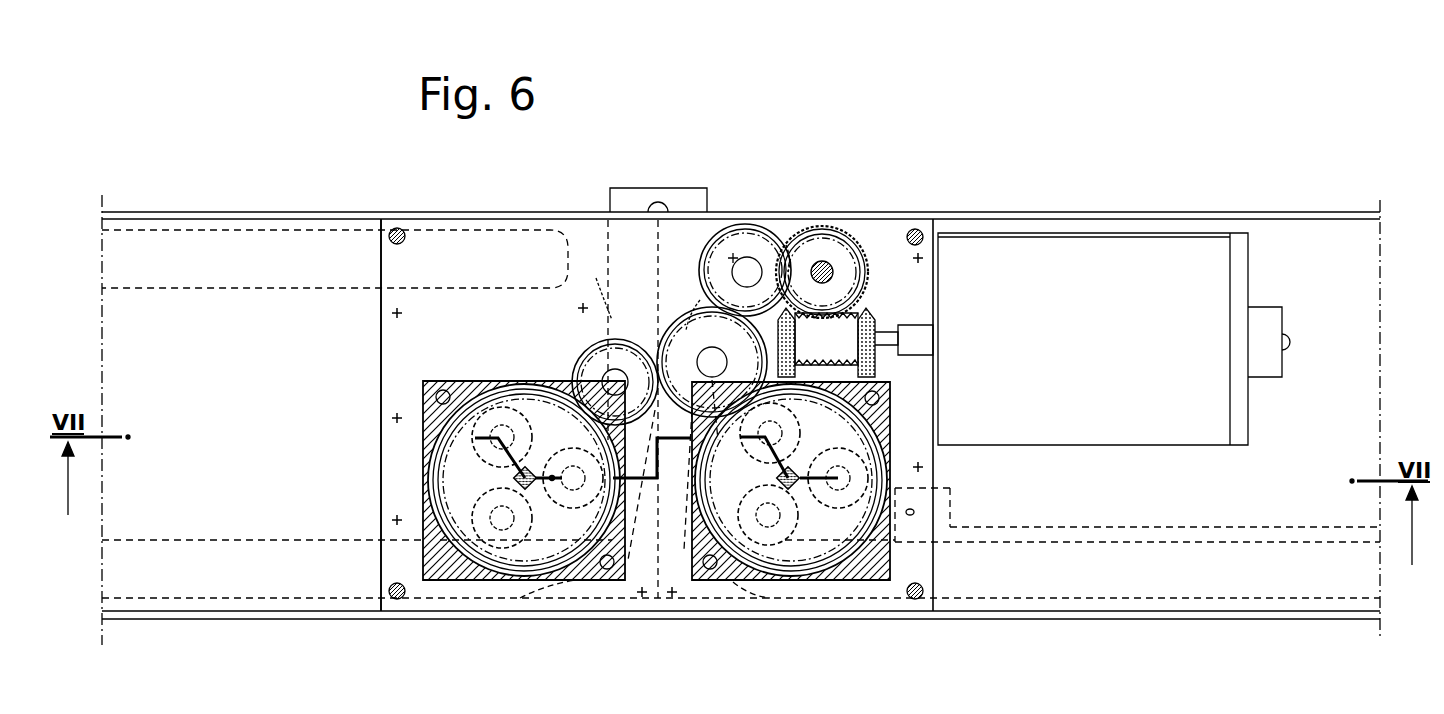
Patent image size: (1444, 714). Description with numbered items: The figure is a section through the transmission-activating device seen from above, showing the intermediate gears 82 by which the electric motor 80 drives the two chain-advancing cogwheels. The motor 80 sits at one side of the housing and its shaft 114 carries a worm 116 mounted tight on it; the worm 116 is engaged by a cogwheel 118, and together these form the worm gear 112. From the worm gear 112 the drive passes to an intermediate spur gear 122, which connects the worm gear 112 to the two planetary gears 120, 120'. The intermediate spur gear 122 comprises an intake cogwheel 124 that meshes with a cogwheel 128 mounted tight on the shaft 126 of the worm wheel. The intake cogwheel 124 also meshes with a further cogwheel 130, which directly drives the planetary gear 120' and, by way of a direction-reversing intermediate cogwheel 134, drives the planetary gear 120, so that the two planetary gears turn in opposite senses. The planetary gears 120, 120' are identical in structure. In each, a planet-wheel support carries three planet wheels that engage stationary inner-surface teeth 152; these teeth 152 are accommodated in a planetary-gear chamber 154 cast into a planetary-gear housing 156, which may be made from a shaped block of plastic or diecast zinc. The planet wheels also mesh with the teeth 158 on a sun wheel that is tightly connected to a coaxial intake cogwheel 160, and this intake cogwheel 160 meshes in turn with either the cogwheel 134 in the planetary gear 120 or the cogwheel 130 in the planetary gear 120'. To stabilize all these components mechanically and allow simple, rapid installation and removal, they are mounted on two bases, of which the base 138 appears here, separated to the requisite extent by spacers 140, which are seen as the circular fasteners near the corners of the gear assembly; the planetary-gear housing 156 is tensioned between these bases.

The electric motor 80 is at (1137, 262).
The intermediate gears 82 is at (596, 274).
The worm gear 112 is at (890, 270).
The shaft of motor 114 is at (887, 332).
The worm 116 is at (880, 368).
The cogwheel 118 is at (792, 247).
The planetary gear 120 is at (482, 485).
The planetary gear 120' is at (855, 524).
The intermediate spur gear 122 is at (688, 296).
The intake cogwheel 124 is at (735, 226).
The shaft of the worm wheel 126 is at (836, 230).
The cogwheel 128 is at (838, 232).
The cogwheel 130 is at (660, 336).
The direction-reversing intermediate cogwheel 134 is at (580, 355).
The base 138 is at (381, 338).
The spacers 140 is at (397, 228).
The stationary inner-surface teeth 152 is at (598, 490).
The planetary-gear chamber 154 is at (452, 482).
The planetary-gear housing 156 is at (432, 558).
The teeth on sun wheel 158 is at (840, 478).
The intake cogwheel 160 is at (434, 448).